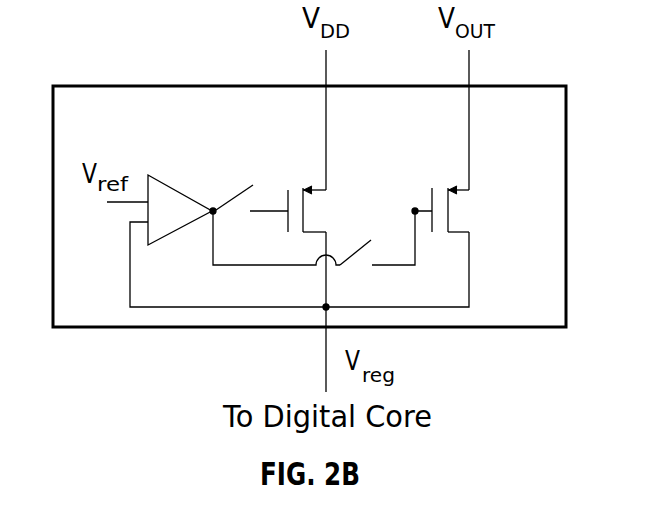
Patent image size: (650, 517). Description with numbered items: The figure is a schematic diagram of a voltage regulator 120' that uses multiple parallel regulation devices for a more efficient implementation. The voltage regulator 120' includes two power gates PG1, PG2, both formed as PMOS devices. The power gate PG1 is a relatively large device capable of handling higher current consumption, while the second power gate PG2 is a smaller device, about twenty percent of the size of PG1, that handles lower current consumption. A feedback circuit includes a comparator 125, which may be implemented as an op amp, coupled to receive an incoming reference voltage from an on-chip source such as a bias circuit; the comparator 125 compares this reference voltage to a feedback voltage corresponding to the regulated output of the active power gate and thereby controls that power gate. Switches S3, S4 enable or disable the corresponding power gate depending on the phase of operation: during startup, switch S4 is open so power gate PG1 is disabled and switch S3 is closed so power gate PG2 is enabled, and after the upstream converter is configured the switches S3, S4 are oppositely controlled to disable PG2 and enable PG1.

The voltage regulator 120' is at (305, 189).
The comparator 125 is at (178, 190).
The switch S3 is at (248, 186).
The switch S4 is at (322, 255).
The power gate PG1 is at (403, 209).
The second power gate PG2 is at (295, 191).